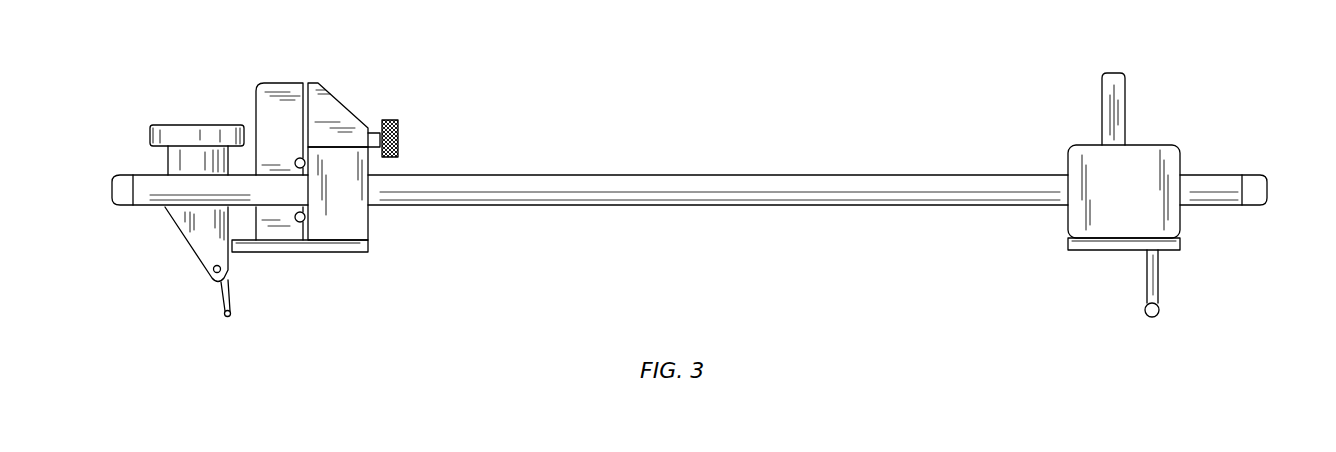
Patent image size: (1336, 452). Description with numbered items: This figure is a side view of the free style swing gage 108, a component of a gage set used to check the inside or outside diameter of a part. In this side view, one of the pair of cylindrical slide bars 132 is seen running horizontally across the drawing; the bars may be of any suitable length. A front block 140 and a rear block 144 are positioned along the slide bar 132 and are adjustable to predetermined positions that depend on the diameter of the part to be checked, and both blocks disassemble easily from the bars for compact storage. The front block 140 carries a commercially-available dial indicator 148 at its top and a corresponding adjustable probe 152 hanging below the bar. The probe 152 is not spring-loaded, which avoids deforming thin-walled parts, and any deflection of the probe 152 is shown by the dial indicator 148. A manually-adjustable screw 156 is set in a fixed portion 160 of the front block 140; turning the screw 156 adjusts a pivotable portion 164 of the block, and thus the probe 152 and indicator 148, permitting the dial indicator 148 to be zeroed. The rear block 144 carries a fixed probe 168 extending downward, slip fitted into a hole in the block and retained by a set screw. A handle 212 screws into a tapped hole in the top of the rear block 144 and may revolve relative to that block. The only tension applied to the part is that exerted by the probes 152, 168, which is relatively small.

The free style swing gage 108 is at (490, 115).
The cylindrical slide bar 132 is at (840, 175).
The front block 140 is at (368, 220).
The rear block 144 is at (1177, 147).
The dial indicator 148 is at (180, 125).
The adjustable probe 152 is at (228, 290).
The manually-adjustable screw 156 is at (390, 120).
The fixed portion 160 is at (340, 108).
The pivotable portion 164 is at (268, 83).
The fixed probe 168 is at (1160, 283).
The handle 212 is at (1125, 95).